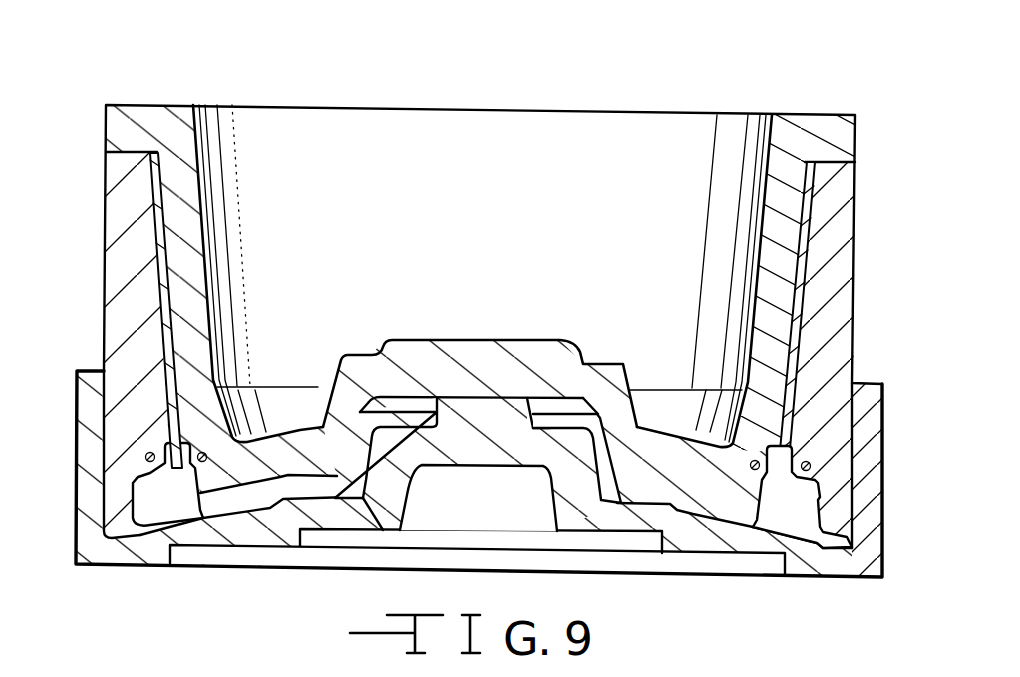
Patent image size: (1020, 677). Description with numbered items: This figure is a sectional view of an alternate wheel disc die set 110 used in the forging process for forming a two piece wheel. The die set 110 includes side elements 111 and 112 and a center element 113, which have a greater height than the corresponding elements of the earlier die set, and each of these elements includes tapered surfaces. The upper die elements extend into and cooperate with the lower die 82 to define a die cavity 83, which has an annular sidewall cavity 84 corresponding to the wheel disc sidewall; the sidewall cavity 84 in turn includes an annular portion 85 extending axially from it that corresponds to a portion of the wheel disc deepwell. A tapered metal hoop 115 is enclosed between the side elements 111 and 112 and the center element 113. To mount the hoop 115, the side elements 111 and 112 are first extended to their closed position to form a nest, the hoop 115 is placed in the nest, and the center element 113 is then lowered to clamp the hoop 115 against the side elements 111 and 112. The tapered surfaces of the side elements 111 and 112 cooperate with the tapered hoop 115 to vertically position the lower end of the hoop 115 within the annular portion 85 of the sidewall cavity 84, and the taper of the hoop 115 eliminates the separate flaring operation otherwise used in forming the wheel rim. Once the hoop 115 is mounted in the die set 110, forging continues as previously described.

The die set 110 is at (730, 99).
The side element 111 is at (105, 274).
The side element 112 is at (836, 281).
The center element 113 is at (460, 353).
The die cavity 83 is at (600, 450).
The lower die 82 is at (135, 552).
The annular sidewall cavity 84 is at (185, 517).
The annular portion 85 is at (165, 466).
The tapered metal hoop 115 is at (783, 453).